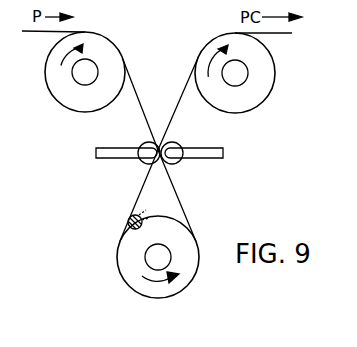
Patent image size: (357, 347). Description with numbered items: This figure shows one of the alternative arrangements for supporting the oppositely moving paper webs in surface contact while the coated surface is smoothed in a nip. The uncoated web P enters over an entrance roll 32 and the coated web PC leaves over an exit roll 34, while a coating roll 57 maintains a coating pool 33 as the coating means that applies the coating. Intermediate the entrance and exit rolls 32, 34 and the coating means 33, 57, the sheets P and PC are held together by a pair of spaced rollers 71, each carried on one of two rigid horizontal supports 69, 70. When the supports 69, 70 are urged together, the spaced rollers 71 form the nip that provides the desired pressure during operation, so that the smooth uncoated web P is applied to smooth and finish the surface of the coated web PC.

The entrance roll 32 is at (86, 99).
The exit roll 34 is at (240, 102).
The coating pool 33 is at (129, 230).
The coating roll 57 is at (189, 260).
The rigid horizontal support 69 is at (112, 151).
The rigid horizontal support 70 is at (210, 154).
The spaced rollers 71 is at (143, 145).